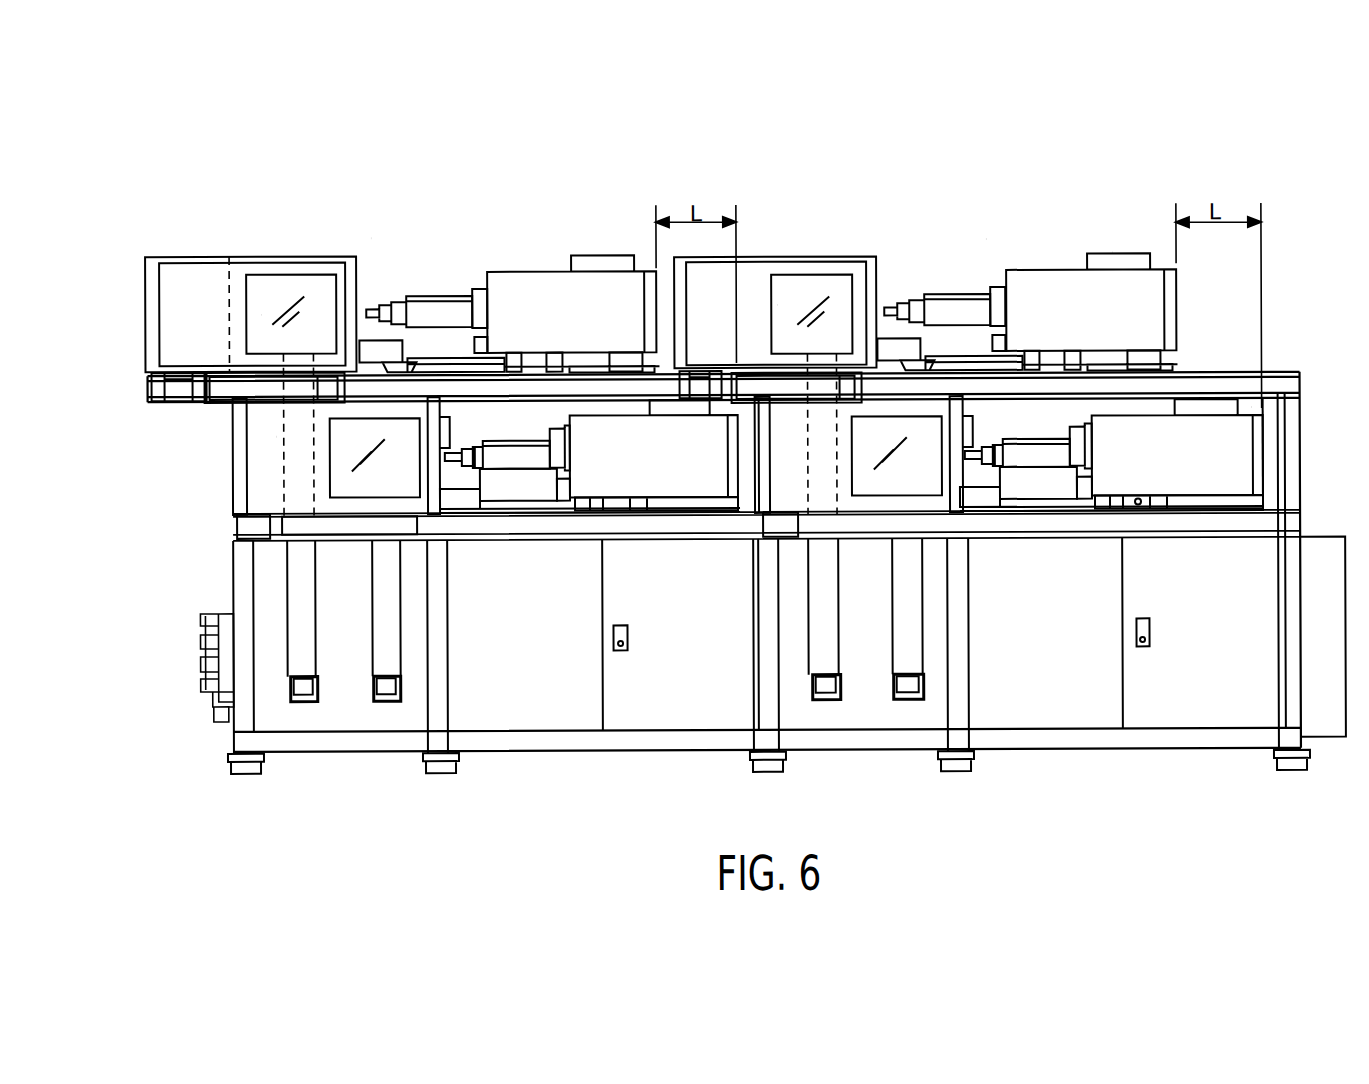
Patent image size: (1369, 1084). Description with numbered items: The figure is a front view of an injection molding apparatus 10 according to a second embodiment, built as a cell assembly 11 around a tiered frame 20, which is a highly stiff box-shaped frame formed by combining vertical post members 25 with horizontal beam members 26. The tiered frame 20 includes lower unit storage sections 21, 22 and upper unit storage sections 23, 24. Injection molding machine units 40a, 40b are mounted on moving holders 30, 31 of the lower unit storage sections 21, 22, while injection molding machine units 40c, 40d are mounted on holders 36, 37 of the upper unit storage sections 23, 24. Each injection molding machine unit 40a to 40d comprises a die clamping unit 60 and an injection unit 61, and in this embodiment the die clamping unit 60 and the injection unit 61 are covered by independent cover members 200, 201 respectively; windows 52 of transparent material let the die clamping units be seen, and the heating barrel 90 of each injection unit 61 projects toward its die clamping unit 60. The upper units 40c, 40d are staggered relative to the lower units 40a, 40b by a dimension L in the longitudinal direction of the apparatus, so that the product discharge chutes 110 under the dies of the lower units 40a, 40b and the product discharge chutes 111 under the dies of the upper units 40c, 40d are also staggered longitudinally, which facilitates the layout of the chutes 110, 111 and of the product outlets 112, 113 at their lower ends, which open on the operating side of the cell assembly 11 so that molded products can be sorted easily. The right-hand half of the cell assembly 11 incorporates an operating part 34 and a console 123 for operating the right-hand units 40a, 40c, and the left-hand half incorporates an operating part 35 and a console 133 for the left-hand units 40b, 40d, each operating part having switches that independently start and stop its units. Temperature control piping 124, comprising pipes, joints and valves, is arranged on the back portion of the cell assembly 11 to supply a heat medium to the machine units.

The injection molding apparatus 10 is at (987, 240).
The cell assembly 11 is at (572, 757).
The tiered frame 20 is at (233, 566).
The lower unit storage section 21 is at (1045, 490).
The lower unit storage section 22 is at (532, 490).
The upper unit storage section 23 is at (960, 265).
The upper unit storage section 24 is at (432, 277).
The post member 25 is at (1287, 483).
The beam member 26 is at (1197, 380).
The moving holder 30 is at (1137, 507).
The moving holder 31 is at (567, 507).
The operating part 34 is at (788, 388).
The operating part 35 is at (220, 380).
The holder 36 is at (1118, 362).
The holder 37 is at (597, 363).
The injection molding machine unit 40a is at (1252, 409).
The injection molding machine unit 40b is at (277, 435).
The injection molding machine unit 40c is at (1113, 254).
The injection molding machine unit 40d is at (372, 237).
The window 52 is at (262, 313).
The die clamping unit 60 is at (283, 255).
The injection unit 61 is at (508, 267).
The heating barrel 90 is at (402, 298).
The product discharge chute 110 is at (390, 667).
The product discharge chute 111 is at (302, 665).
The product outlet 112 is at (388, 700).
The product outlet 113 is at (302, 700).
The console 123 is at (1178, 700).
The temperature control piping 124 is at (197, 655).
The console 133 is at (645, 715).
The cover member 200 is at (307, 268).
The cover member 201 is at (547, 290).